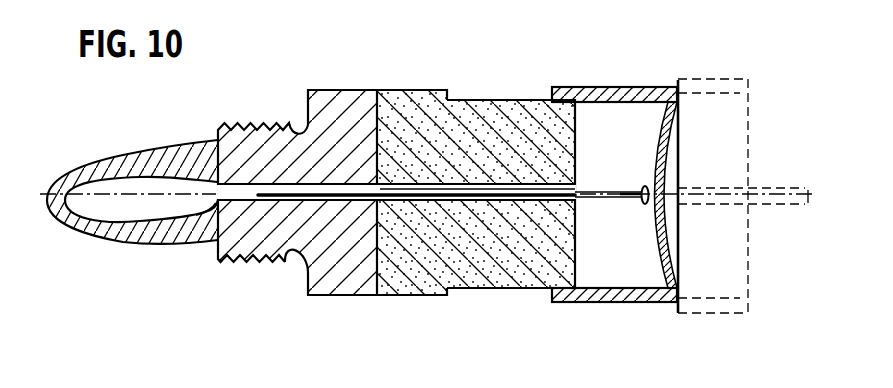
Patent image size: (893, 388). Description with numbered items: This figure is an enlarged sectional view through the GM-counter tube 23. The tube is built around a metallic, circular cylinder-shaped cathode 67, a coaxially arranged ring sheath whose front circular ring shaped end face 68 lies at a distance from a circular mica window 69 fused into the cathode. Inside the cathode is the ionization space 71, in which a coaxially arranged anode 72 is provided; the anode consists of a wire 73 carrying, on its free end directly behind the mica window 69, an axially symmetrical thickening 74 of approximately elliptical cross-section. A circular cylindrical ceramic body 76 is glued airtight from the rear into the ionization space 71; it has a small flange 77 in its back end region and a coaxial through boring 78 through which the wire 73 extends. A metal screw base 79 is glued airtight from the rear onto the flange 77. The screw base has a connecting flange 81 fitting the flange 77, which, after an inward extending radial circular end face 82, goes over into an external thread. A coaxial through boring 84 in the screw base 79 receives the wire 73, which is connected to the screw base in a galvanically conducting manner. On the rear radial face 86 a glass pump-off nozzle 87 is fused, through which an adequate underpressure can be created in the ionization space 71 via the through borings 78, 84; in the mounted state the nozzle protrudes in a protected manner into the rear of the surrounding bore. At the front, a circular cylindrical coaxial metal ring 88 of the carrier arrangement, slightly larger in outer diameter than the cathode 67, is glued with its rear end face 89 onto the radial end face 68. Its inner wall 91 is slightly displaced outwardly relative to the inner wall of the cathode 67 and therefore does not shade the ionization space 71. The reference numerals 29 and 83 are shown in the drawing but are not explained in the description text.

The GM-counter tube 23 is at (512, 294).
The bore of tubular loop 29 is at (98, 200).
The cathode 67 is at (633, 299).
The front circular ring shaped end face 68 is at (683, 301).
The mica window 69 is at (658, 110).
The ionization space 71 is at (604, 153).
The anode 72 is at (623, 203).
The wire 73 is at (595, 201).
The thickening 74 is at (640, 186).
The ceramic body 76 is at (507, 122).
The flange 77 is at (418, 95).
The through boring 78 is at (461, 170).
The screw base 79 is at (285, 272).
The connecting flange 81 is at (342, 96).
The radial circular end face 82 is at (304, 266).
The threaded shank 83 is at (252, 126).
The through boring 84 is at (349, 183).
The rear radial face 86 is at (207, 222).
The pump-off nozzle 87 is at (142, 237).
The ring 88 is at (712, 305).
The rear end face 89 is at (676, 80).
The inner wall 91 is at (735, 94).